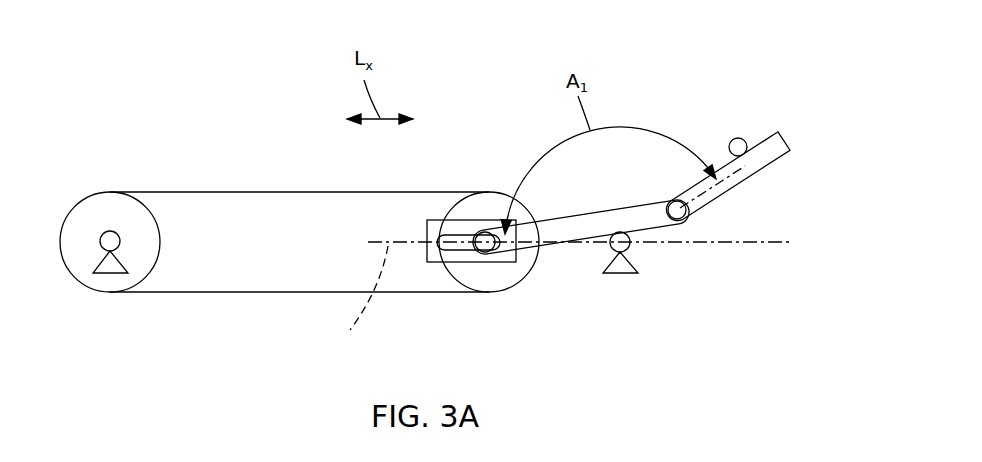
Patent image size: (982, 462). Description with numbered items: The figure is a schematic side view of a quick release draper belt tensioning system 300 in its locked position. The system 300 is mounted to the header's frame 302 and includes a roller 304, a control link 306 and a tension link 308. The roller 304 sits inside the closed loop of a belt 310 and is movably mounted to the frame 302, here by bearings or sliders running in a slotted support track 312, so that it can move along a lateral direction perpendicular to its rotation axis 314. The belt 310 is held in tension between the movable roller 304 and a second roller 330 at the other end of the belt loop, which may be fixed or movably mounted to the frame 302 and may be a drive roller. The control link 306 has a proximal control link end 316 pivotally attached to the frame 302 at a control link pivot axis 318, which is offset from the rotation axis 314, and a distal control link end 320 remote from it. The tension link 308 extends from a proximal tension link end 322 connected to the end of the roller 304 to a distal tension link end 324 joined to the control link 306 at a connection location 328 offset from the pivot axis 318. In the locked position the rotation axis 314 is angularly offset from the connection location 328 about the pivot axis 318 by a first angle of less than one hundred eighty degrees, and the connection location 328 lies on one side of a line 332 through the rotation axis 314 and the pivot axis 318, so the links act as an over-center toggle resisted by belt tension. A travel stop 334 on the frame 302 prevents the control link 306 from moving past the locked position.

The quick release draper belt tensioning system 300 is at (768, 77).
The frame 302 is at (110, 263).
The roller 304 is at (462, 208).
The control link 306 is at (718, 188).
The tension link 308 is at (570, 223).
The belt 310 is at (242, 191).
The slotted support track 312 is at (432, 230).
The rotation axis 314 is at (485, 252).
The proximal control link end 316 is at (631, 247).
The control link pivot axis 318 is at (670, 213).
The distal control link end 320 is at (784, 134).
The proximal tension link end 322 is at (506, 226).
The distal tension link end 324 is at (658, 207).
The connection location 328 is at (684, 220).
The second roller 330 is at (102, 208).
The line 332 is at (361, 304).
The travel stop 334 is at (734, 139).